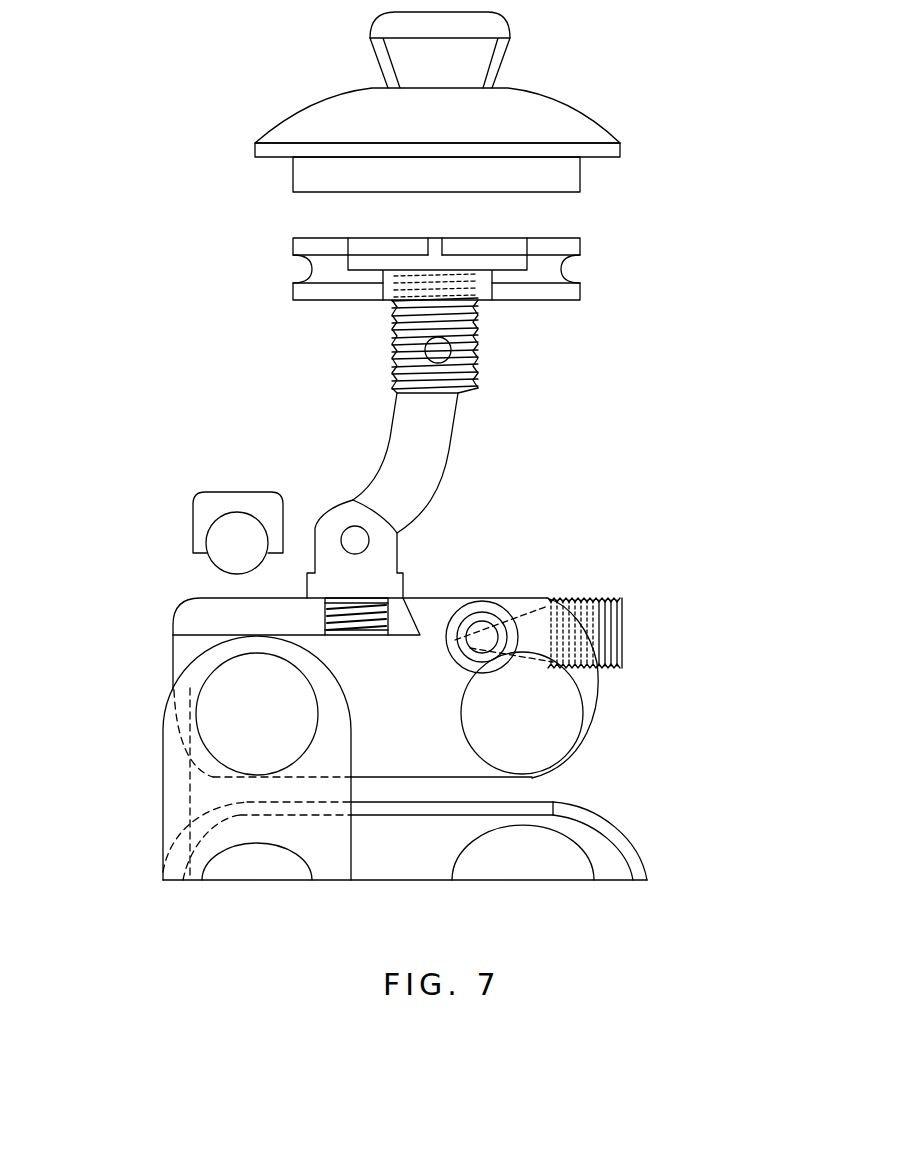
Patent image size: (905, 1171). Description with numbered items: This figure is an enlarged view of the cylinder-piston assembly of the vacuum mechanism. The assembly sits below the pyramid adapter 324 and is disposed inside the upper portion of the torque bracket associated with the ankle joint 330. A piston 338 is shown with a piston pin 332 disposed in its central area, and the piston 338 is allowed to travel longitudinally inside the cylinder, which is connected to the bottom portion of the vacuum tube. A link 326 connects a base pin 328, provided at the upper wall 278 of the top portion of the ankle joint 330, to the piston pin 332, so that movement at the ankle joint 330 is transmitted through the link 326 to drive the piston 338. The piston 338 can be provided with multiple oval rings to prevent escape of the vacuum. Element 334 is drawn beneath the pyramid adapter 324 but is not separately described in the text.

The upper wall 278 is at (238, 597).
The pyramid adapter 324 is at (540, 108).
The link 326 is at (423, 455).
The base pin 328 is at (357, 540).
The ankle joint 330 is at (598, 690).
The piston pin 332 is at (452, 347).
The cap insert 334 is at (498, 207).
The piston 338 is at (545, 263).